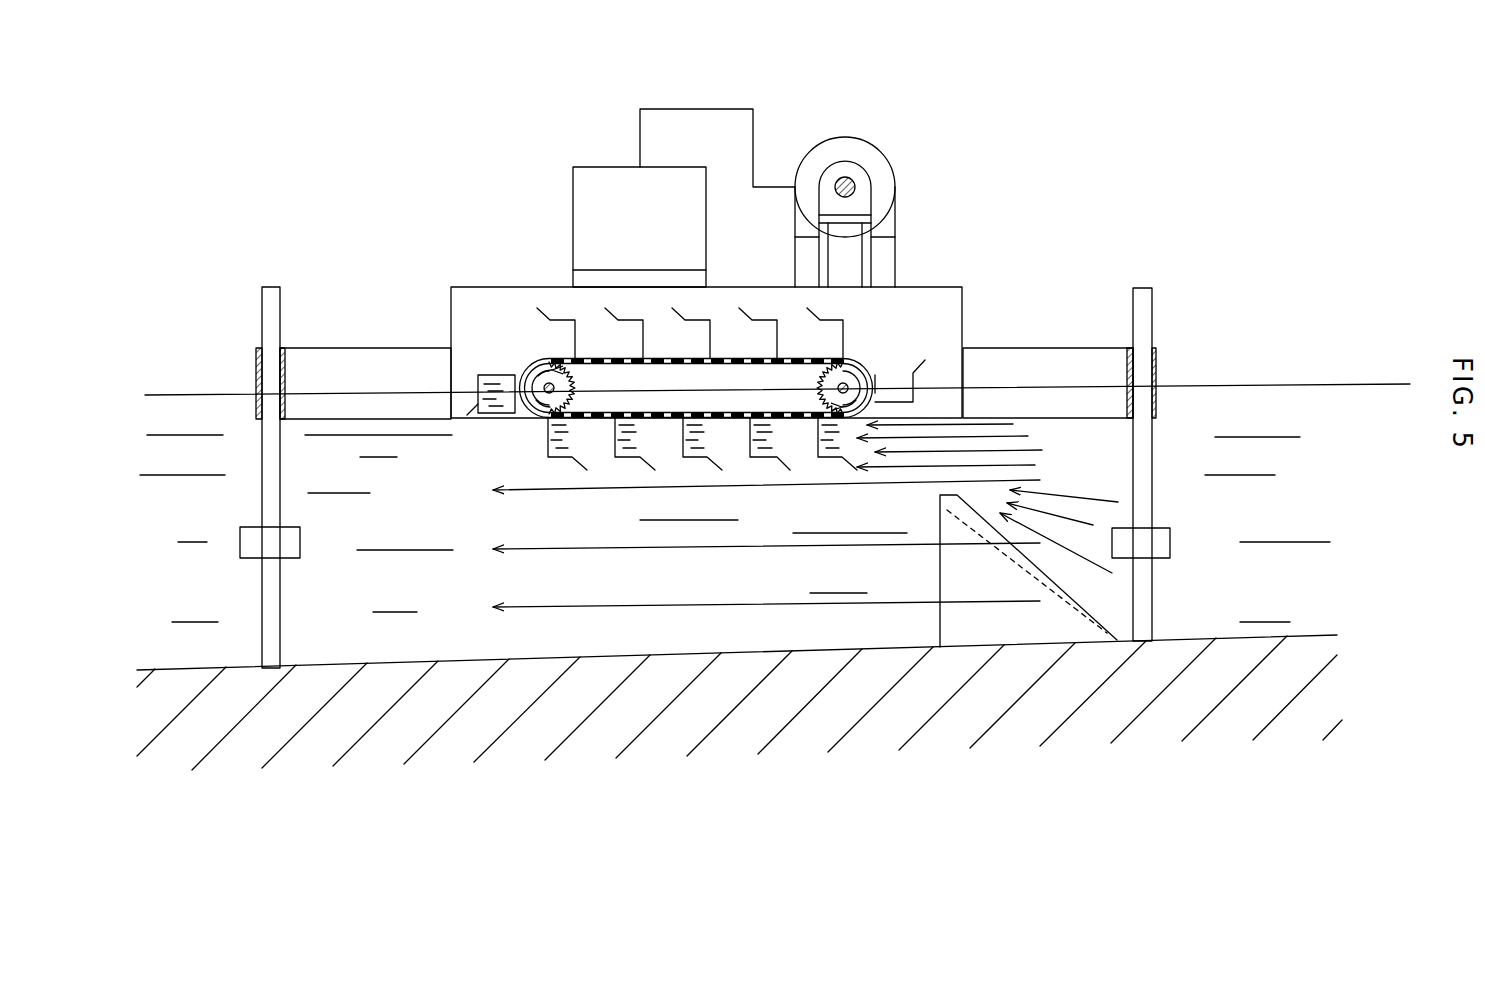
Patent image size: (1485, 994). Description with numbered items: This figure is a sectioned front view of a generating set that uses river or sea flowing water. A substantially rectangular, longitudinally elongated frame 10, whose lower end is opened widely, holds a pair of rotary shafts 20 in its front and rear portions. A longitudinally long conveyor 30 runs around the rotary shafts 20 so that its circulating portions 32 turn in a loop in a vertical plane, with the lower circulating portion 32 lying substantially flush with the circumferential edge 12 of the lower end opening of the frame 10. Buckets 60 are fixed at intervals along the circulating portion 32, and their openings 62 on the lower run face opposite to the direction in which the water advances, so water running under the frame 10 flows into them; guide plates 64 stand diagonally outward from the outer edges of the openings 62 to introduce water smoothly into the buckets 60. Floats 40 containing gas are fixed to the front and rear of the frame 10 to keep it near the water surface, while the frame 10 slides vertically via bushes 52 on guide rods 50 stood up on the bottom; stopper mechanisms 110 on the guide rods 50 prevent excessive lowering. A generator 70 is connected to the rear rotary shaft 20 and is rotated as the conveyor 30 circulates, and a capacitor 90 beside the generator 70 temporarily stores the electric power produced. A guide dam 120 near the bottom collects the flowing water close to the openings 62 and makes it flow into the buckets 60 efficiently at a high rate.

The frame 10 is at (503, 287).
The circumferential edge 12 is at (503, 422).
The rotary shaft 20 is at (544, 370).
The conveyor 30 is at (599, 428).
The circulating portion 32 is at (740, 358).
The float 40 is at (378, 348).
The guide rod 50 is at (280, 294).
The bush 52 is at (256, 352).
The bucket 60 is at (562, 460).
The opening 62 is at (790, 445).
The guide plate 64 is at (537, 310).
The generator 70 is at (860, 146).
The capacitor 90 is at (600, 167).
The stopper mechanism 110 is at (300, 546).
The guide dam 120 is at (940, 571).